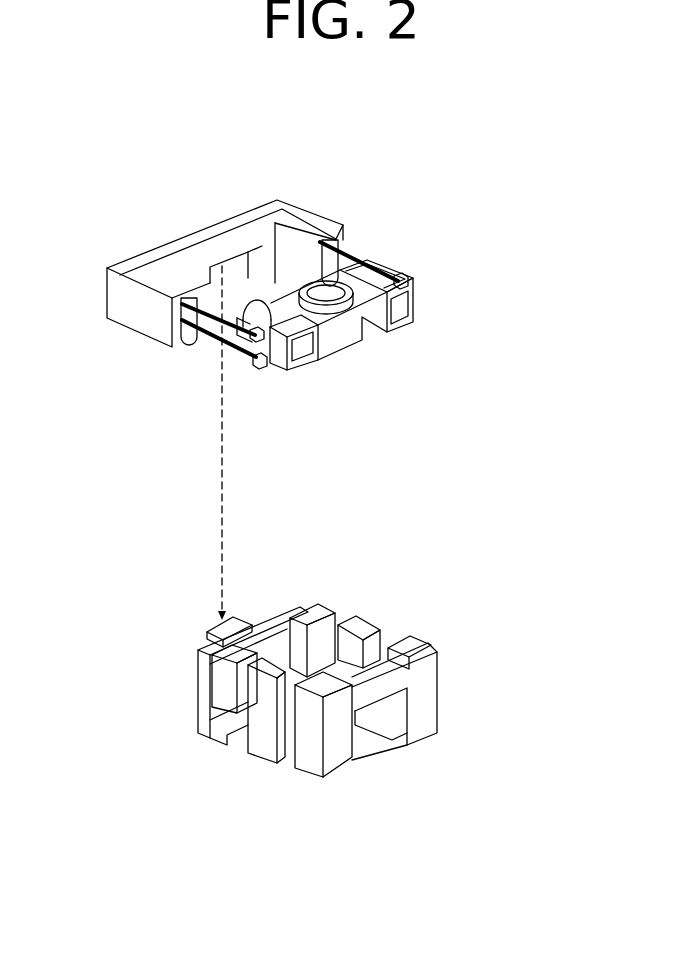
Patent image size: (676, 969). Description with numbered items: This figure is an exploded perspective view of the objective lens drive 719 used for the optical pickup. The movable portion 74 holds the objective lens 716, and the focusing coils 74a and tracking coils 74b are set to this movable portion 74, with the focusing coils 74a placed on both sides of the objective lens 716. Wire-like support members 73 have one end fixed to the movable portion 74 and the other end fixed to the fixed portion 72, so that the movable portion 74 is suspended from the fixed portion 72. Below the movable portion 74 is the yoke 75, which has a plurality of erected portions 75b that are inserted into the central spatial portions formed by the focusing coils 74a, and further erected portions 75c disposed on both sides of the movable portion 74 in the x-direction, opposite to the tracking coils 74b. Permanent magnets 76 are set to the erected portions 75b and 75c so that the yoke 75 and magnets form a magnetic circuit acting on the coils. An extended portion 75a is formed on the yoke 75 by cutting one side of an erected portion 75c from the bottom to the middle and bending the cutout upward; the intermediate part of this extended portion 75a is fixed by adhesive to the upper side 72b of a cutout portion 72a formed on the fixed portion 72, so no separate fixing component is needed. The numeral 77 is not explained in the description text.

The objective lens drive 719 is at (376, 166).
The holder body 77 is at (122, 265).
The fixed portion 72 is at (178, 268).
The cutout portion 72a is at (216, 270).
The upper side 72b is at (235, 268).
The wire-like support member 73 is at (372, 265).
The movable portion 74 is at (377, 318).
The focusing coil 74a is at (395, 274).
The tracking coil 74b is at (420, 308).
The objective lens 716 is at (328, 296).
The yoke 75 is at (426, 681).
The extended portion 75a is at (207, 628).
The erected portion 75b is at (362, 630).
The erected portion 75c is at (272, 636).
The permanent magnet 76 is at (322, 612).